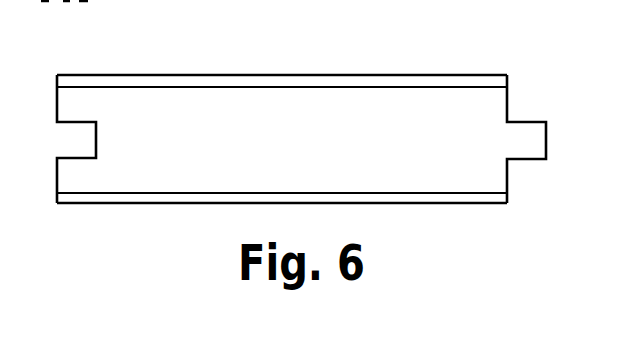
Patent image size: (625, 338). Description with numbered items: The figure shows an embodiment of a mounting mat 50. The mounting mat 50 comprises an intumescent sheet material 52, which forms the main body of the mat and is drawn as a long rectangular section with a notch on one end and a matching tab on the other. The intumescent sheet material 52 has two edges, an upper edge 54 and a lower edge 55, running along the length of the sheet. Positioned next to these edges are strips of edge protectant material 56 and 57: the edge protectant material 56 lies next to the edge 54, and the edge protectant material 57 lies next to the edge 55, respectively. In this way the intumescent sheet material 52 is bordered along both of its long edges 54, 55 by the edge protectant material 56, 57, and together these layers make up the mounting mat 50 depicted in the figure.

The mounting mat 50 is at (341, 45).
The intumescent sheet material 52 is at (280, 107).
The edge 54 is at (200, 88).
The edge 55 is at (181, 192).
The edge protectant material 56 is at (400, 78).
The edge protectant material 57 is at (432, 201).